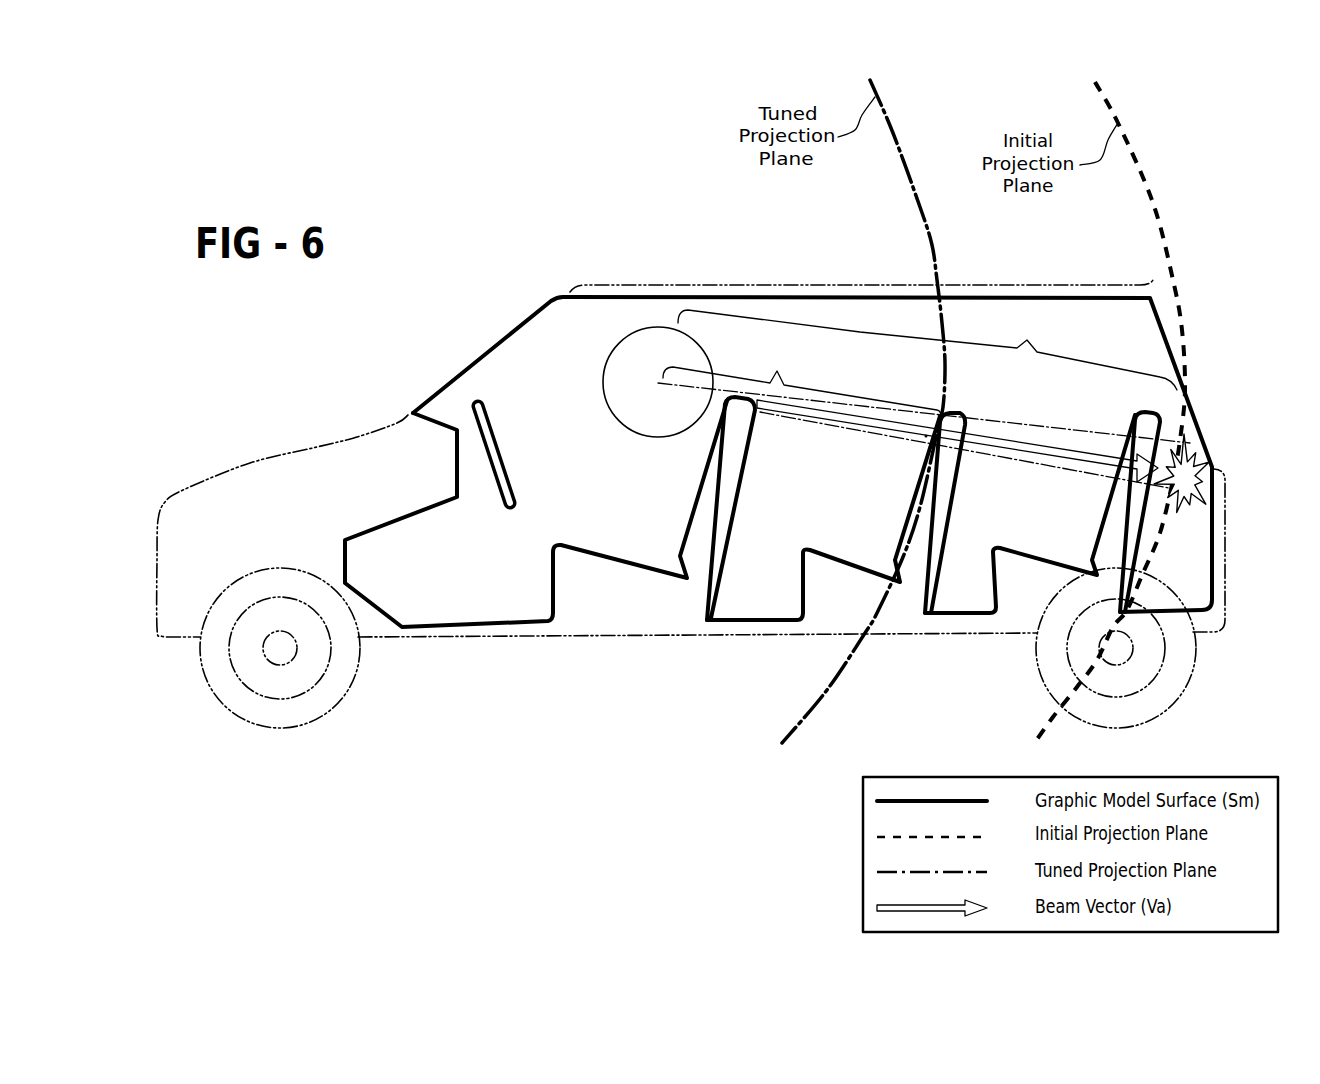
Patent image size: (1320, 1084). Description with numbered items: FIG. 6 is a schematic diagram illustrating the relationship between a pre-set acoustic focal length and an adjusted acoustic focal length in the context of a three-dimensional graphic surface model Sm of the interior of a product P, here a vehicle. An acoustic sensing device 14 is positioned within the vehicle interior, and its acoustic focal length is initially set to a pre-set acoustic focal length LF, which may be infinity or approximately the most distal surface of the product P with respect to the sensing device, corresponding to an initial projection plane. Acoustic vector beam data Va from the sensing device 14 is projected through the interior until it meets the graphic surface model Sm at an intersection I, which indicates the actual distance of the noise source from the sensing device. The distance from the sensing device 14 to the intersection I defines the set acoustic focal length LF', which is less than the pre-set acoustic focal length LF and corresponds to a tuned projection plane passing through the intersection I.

The acoustic sensing device 14 is at (642, 374).
The three-dimensional graphic surface model Sm is at (526, 332).
The product P is at (248, 528).
The acoustic vector beam data Va is at (873, 421).
The intersection I is at (926, 436).
The pre-set acoustic focal length LF is at (927, 350).
The set acoustic focal length LF' is at (924, 419).